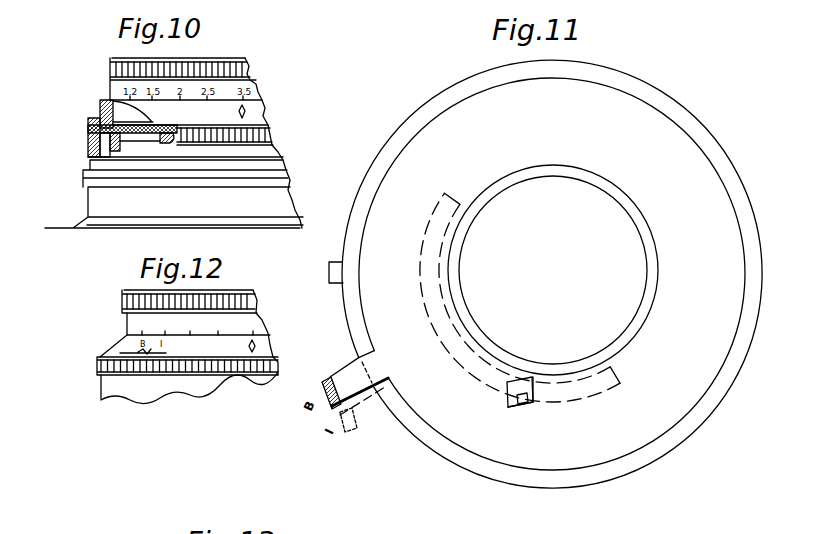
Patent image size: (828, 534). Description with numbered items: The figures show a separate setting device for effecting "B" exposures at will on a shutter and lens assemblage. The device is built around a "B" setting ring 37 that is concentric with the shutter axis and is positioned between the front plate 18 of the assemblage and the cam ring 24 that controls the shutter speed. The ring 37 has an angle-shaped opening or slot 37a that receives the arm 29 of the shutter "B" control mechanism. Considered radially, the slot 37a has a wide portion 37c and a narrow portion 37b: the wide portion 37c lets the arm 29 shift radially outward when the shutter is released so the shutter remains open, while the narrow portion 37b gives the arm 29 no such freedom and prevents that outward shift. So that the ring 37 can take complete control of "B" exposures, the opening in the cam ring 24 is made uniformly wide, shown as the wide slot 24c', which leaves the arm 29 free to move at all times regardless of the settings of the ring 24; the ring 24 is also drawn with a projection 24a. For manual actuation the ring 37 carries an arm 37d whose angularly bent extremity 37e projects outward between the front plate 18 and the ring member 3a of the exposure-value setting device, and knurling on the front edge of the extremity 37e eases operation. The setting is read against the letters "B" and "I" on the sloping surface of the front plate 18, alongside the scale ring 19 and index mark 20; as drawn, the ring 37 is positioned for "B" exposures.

In FIG. 10, the front plate 18 is at (106, 103).
In FIG. 12, the front plate 18 is at (262, 342).
In FIG. 12, the scale ring 19 is at (127, 323).
In FIG. 10, the index mark 20 is at (256, 112).
In FIG. 12, the index mark 20 is at (262, 352).
In FIG. 10, the cam ring 24 is at (141, 135).
In FIG. 11, the cam ring 24 is at (680, 435).
In FIG. 11, the projection of ring 24a is at (333, 263).
In FIG. 11, the wide slot 24c' is at (547, 346).
In FIG. 10, the arm 29 is at (137, 150).
In FIG. 11, the arm 29 is at (519, 403).
In FIG. 10, the ring member 3a is at (88, 133).
In FIG. 12, the ring member 3a is at (113, 386).
In FIG. 10, the B setting ring 37 is at (127, 135).
In FIG. 11, the B setting ring 37 is at (705, 365).
In FIG. 11, the angle-shaped slot 37a is at (524, 395).
In FIG. 11, the narrow portion 37b is at (512, 382).
In FIG. 11, the wide portion 37c is at (528, 404).
In FIG. 11, the arm 37d is at (348, 373).
In FIG. 10, the bent extremity 37e is at (97, 112).
In FIG. 12, the bent extremity 37e is at (130, 352).
In FIG. 11, the bent extremity 37e is at (320, 383).